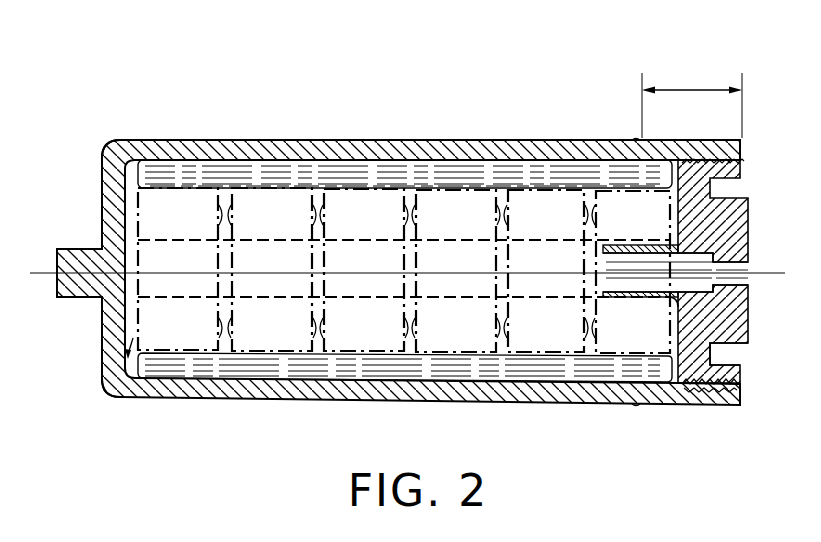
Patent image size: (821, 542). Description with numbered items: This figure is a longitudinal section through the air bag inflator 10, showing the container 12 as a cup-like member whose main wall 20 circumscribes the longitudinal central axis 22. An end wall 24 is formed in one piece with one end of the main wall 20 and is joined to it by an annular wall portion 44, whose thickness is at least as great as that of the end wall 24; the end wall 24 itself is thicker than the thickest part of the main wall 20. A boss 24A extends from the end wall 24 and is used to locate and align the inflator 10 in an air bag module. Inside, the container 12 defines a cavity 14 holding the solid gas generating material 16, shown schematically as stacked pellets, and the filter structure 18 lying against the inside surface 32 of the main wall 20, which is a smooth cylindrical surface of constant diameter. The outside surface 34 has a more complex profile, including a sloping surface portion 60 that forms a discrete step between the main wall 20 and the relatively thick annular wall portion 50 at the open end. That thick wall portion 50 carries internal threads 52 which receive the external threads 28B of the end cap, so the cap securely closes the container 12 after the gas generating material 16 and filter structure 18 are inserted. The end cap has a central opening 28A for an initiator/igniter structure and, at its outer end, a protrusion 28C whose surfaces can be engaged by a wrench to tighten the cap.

The inflator 10 is at (484, 74).
The container 12 is at (511, 130).
The cavity 14 is at (111, 385).
The solid gas generating material 16 is at (184, 314).
The filter structure 18 is at (203, 168).
The main wall 20 is at (251, 143).
The longitudinal central axis 22 is at (41, 271).
The end wall 24 is at (97, 201).
The boss 24A is at (90, 284).
The central opening 28A is at (691, 267).
The external threads 28B is at (710, 405).
The protrusion 28C is at (756, 212).
The inside surface 32 is at (358, 166).
The outside surface 34 is at (410, 140).
The annular wall portion 44 is at (114, 139).
The thick annular wall portion 50 is at (718, 89).
The internal threads 52 is at (688, 405).
The sloping surface portion 60 is at (636, 139).